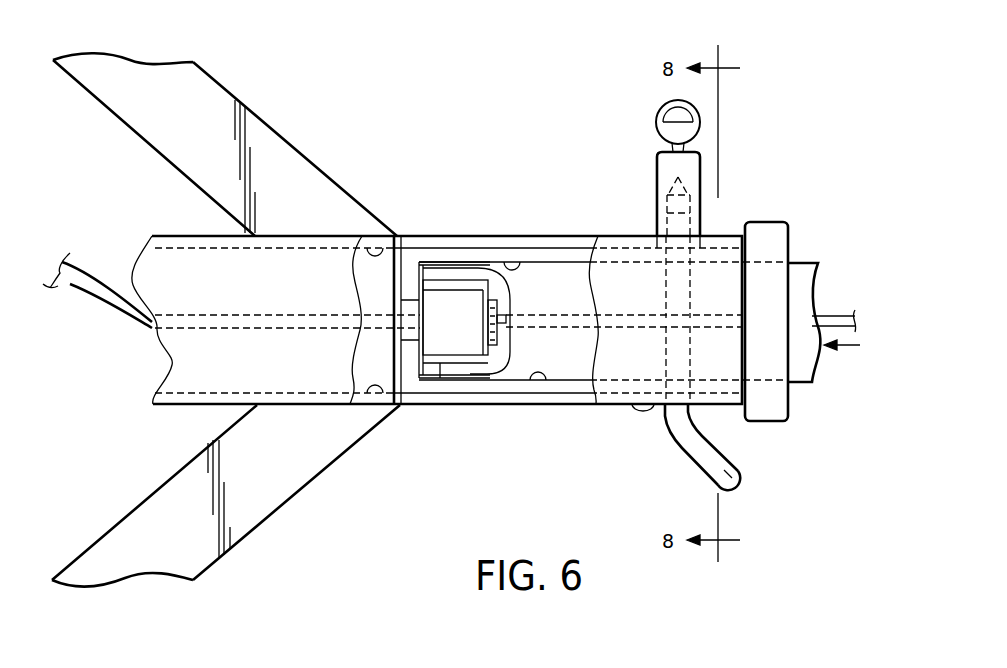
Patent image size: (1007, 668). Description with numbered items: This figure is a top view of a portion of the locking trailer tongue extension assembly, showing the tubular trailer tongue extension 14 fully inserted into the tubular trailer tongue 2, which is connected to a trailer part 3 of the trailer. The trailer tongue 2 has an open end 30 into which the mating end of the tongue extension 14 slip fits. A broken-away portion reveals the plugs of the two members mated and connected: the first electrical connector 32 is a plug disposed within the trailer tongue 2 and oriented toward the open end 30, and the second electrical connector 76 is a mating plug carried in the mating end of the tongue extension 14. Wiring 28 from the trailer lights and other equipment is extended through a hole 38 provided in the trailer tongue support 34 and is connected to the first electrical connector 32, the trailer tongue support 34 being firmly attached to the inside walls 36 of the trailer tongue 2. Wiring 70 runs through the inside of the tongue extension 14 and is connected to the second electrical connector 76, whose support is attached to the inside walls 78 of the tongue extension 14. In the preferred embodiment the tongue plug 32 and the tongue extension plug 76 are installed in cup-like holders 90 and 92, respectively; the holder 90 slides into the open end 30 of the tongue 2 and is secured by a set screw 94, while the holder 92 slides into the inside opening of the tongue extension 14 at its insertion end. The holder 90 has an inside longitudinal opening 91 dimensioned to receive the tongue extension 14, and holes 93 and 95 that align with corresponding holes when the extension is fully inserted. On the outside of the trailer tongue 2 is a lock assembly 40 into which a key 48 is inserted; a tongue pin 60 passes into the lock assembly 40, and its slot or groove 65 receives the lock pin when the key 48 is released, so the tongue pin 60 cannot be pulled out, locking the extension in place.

The tubular trailer tongue 2 is at (185, 408).
The trailer part 3 is at (150, 148).
The tubular trailer tongue extension 14 is at (800, 250).
The wiring 28 is at (118, 323).
The open end 30 is at (793, 384).
The first electrical connector 32 is at (432, 305).
The trailer tongue support 34 is at (408, 373).
The inside walls 36 is at (385, 250).
The hole 38 is at (407, 313).
The lock assembly 40 is at (697, 220).
The key 48 is at (658, 115).
The tongue pin 60 is at (733, 477).
The slot or groove 65 is at (670, 205).
The wiring 70 is at (532, 313).
The second electrical connector 76 is at (486, 362).
The inside walls 78 is at (515, 262).
The cup-like holder 90 is at (487, 255).
The inside longitudinal opening 91 is at (790, 407).
The cup-like holder 92 is at (455, 368).
The hole 93 is at (677, 255).
The set screw 94 is at (643, 415).
The hole 95 is at (675, 384).